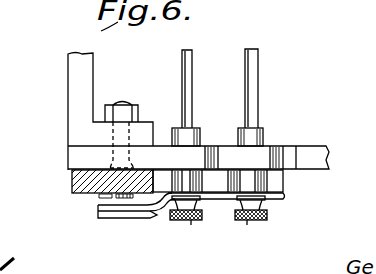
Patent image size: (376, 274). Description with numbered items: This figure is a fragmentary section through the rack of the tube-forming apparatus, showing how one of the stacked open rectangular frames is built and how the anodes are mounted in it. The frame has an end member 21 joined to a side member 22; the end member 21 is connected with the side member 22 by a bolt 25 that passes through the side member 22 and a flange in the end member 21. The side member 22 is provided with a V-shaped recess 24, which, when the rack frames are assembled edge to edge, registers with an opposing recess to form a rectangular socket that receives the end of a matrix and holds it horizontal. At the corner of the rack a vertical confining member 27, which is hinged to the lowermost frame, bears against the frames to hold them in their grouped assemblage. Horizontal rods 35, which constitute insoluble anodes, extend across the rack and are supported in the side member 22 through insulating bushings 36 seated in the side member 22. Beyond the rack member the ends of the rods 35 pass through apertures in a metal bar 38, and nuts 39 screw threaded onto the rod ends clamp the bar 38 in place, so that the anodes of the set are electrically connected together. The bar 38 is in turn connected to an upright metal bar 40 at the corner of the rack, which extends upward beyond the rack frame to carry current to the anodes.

The end member 21 is at (75, 81).
The side member 22 is at (311, 153).
The V-shaped recess 24 is at (222, 154).
The bolt 25 is at (120, 104).
The vertical confining member 27 is at (72, 181).
The rod 35 is at (246, 69).
The insulating bushing 36 is at (237, 129).
The metal bar 38 is at (284, 198).
The nut 39 is at (247, 221).
The upright metal bar 40 is at (110, 213).